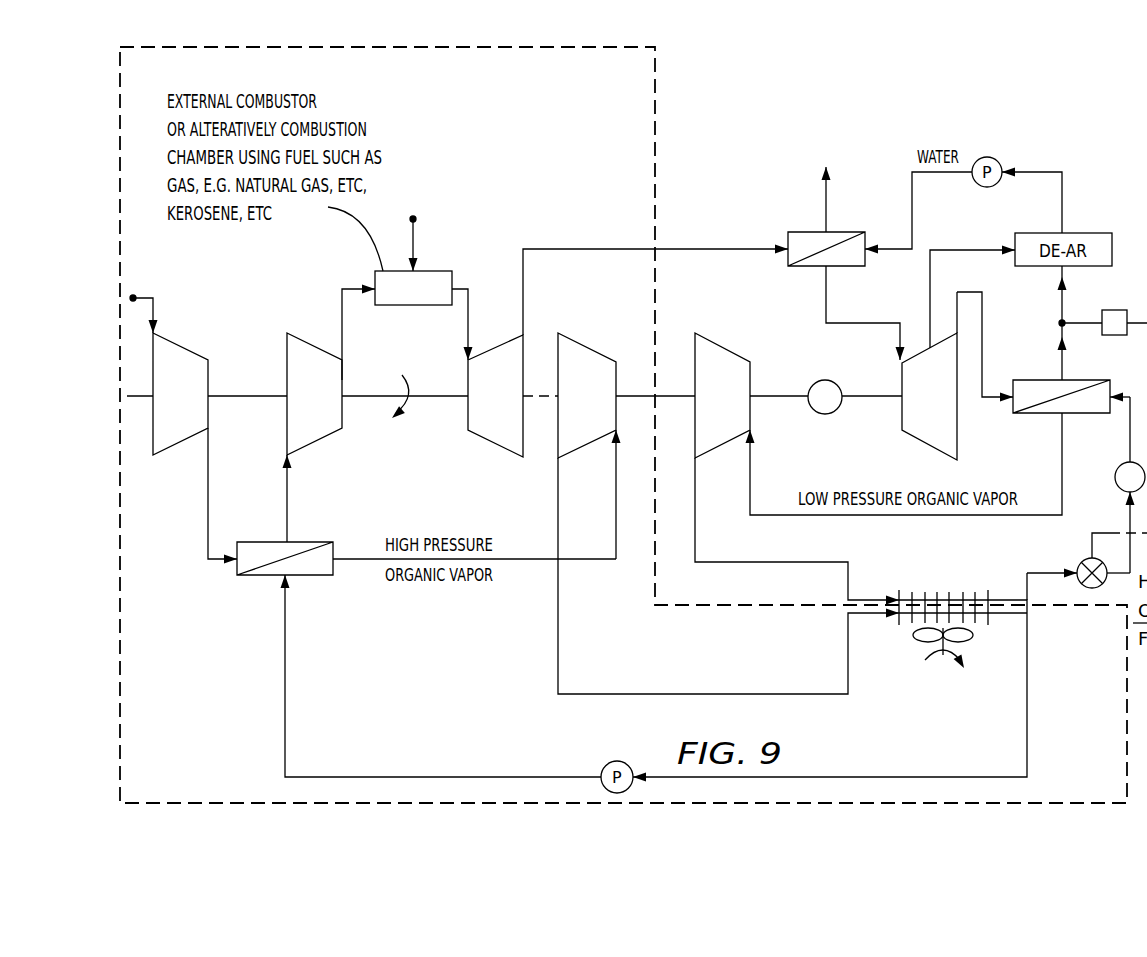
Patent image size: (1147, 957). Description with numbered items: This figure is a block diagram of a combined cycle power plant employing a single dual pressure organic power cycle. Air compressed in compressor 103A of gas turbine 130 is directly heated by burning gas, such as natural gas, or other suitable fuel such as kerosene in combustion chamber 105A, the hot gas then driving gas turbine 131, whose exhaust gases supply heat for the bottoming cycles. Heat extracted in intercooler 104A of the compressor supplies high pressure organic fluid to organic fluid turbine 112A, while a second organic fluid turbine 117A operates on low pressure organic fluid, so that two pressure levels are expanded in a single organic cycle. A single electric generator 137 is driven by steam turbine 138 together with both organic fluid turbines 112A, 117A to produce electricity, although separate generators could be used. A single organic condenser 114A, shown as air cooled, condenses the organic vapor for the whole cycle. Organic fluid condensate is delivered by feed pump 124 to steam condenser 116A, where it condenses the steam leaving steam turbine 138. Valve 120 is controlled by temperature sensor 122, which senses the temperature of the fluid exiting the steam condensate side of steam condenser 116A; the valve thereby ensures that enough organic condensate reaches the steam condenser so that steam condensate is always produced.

The compressor 103A is at (241, 345).
The intercooler 104A is at (254, 577).
The combustion chamber 105A is at (440, 267).
The organic fluid turbine 112A is at (590, 347).
The organic condenser 114A is at (939, 596).
The steam condenser 116A is at (1028, 415).
The organic fluid turbine 117A is at (728, 347).
The valve 120 is at (1082, 560).
The temperature sensor 122 is at (1116, 308).
The feed pump 124 is at (1120, 491).
The gas turbine 130 is at (423, 405).
The gas turbine 131 is at (489, 347).
The electric generator 137 is at (826, 380).
The steam turbine 138 is at (935, 445).